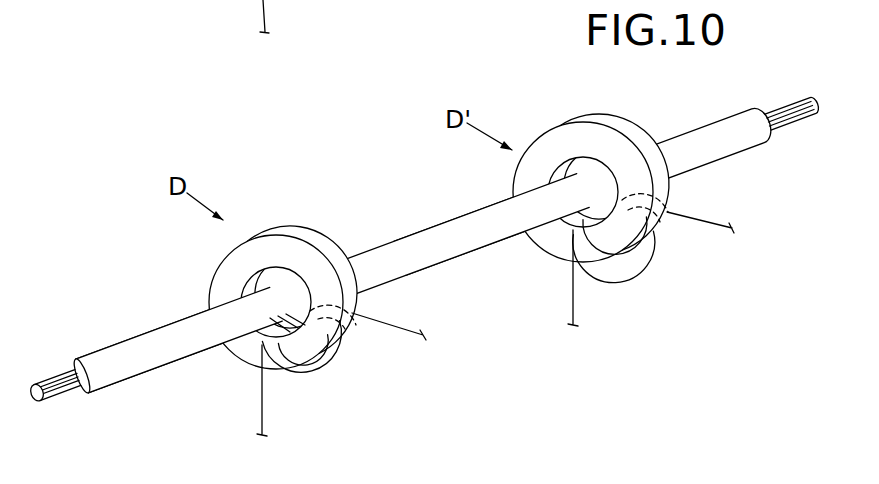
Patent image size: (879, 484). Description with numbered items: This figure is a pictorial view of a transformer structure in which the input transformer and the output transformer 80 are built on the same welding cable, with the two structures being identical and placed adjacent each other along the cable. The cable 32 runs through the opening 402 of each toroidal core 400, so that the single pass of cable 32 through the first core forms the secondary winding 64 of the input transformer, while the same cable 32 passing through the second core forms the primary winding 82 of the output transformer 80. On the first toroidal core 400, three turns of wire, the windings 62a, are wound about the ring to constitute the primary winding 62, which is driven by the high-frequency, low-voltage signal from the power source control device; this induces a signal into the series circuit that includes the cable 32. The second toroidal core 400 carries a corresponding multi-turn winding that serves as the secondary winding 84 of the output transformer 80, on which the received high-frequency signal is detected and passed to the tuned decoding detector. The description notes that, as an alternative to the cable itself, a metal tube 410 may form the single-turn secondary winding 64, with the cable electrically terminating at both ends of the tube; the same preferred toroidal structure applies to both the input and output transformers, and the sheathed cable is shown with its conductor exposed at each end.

The cable 32 is at (438, 265).
The primary winding 62 is at (377, 333).
The windings 62a is at (313, 375).
The secondary winding 64 is at (170, 362).
The output transformer 80 is at (637, 122).
The primary winding 82 is at (730, 160).
The secondary winding 84 is at (687, 220).
The toroidal core 400 is at (233, 293).
The opening 402 is at (252, 287).
The metal tube 410 is at (128, 0).